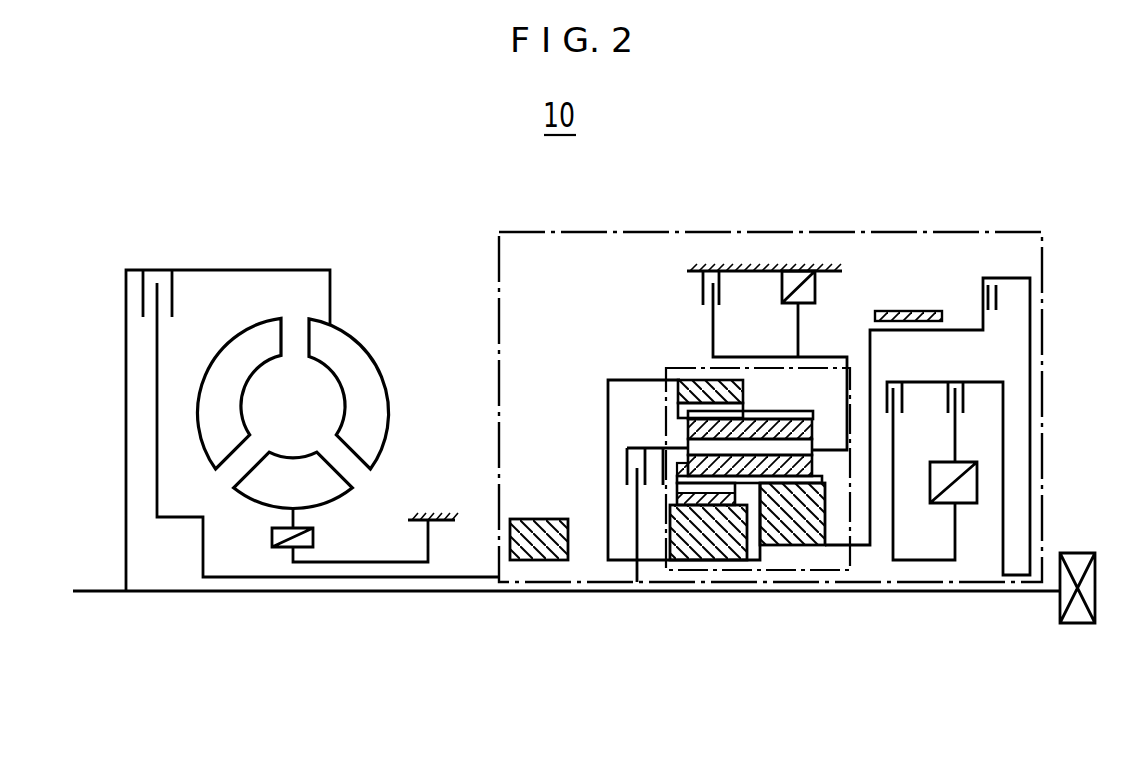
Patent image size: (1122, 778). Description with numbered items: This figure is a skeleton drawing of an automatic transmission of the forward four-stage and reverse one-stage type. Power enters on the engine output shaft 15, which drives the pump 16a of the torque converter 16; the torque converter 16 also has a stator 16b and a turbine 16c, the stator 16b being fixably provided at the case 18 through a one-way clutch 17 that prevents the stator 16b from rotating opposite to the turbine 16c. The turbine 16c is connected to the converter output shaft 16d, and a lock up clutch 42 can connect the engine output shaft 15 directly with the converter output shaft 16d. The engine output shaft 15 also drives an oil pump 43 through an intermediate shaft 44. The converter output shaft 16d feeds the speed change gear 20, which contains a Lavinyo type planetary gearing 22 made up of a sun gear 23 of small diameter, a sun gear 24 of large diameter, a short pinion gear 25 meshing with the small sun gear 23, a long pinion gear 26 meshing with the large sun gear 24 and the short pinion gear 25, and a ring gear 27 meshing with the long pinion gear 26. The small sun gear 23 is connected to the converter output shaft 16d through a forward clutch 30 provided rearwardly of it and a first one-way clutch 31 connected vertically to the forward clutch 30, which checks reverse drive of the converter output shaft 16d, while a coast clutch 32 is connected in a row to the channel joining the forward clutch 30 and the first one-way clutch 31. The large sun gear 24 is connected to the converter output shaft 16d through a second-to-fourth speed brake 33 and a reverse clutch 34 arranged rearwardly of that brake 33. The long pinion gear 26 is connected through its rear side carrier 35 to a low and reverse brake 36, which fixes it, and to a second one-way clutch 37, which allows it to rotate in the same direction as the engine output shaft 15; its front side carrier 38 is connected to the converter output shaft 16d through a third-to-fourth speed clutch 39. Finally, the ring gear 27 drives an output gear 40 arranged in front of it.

The engine output shaft 15 is at (108, 593).
The torque converter 16 is at (334, 413).
The pump 16a is at (369, 378).
The stator 16b is at (330, 488).
The turbine 16c is at (227, 360).
The converter output shaft 16d is at (462, 576).
The one-way clutch 17 is at (270, 540).
The case 18 is at (422, 513).
The speed change gear 20 is at (748, 229).
The Lavinyo type planetary gearing 22 is at (693, 467).
The sun gear of small diameter 23 is at (707, 552).
The sun gear of large diameter 24 is at (793, 537).
The short pinion gear 25 is at (676, 497).
The long pinion gear 26 is at (820, 425).
The ring gear 27 is at (683, 395).
The forward clutch 30 is at (967, 402).
The first one-way clutch 31 is at (967, 495).
The coast clutch 32 is at (907, 402).
The 2-4 brake 33 is at (908, 306).
The reverse clutch 34 is at (992, 255).
The rear side carrier 35 is at (810, 356).
The low & reverse brake 36 is at (723, 280).
The second one-way clutch 37 is at (818, 287).
The front side carrier 38 is at (662, 418).
The 3-4 clutch 39 is at (628, 462).
The output gear 40 is at (537, 552).
The lock up clutch 42 is at (168, 266).
The oil pump 43 is at (1078, 622).
The intermediate shaft 44 is at (890, 593).